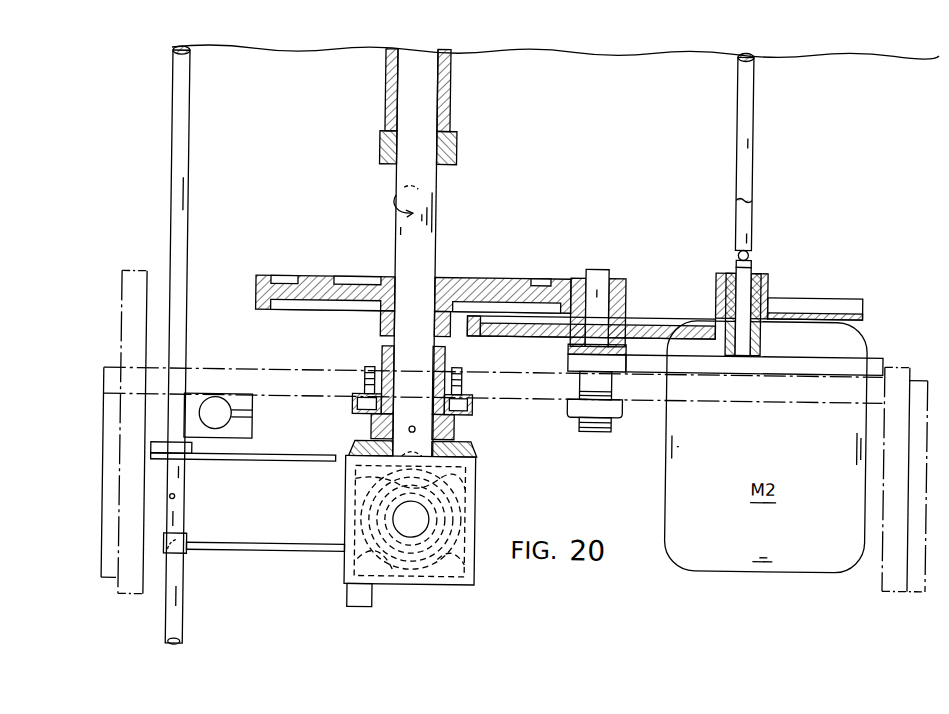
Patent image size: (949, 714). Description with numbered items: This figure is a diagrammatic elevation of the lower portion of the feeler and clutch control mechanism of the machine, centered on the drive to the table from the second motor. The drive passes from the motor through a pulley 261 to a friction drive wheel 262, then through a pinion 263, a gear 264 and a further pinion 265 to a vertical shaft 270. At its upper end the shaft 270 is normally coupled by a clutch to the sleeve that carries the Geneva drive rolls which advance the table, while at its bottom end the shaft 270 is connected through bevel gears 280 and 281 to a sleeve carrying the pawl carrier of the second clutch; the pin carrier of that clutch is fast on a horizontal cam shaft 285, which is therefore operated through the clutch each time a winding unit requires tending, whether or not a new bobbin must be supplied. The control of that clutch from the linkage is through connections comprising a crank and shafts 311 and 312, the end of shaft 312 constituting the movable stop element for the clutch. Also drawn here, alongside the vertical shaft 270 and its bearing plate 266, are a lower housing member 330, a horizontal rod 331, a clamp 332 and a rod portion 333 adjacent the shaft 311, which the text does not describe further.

The pulley 261 is at (762, 300).
The friction drive wheel 262 is at (862, 306).
The pinion 263 is at (762, 338).
The gear 264 is at (712, 336).
The pinion 265 is at (624, 286).
The upper plate 266 is at (560, 281).
The vertical shaft 270 is at (430, 252).
The bevel gear 280 is at (350, 458).
The bevel gear 281 is at (478, 477).
The horizontal cam shaft 285 is at (413, 527).
The shaft 311 is at (186, 188).
The shaft 312 is at (262, 456).
The housing member 330 is at (347, 494).
The rod 331 is at (265, 547).
The clamp 332 is at (168, 556).
The rod portion 333 is at (180, 530).